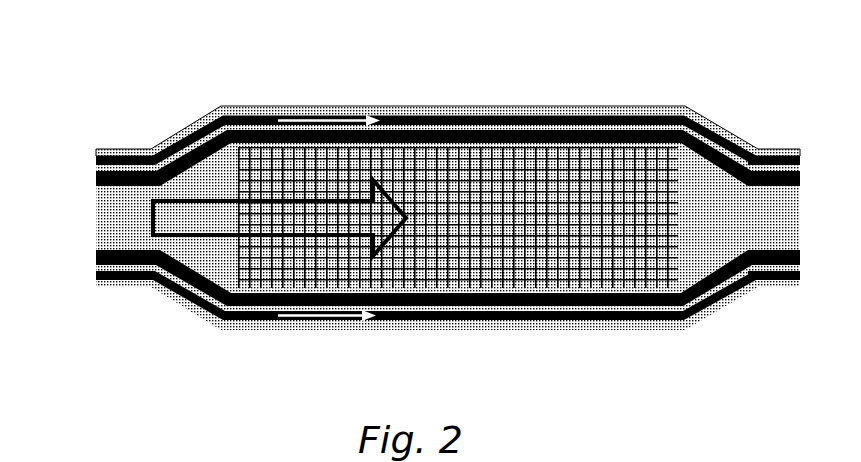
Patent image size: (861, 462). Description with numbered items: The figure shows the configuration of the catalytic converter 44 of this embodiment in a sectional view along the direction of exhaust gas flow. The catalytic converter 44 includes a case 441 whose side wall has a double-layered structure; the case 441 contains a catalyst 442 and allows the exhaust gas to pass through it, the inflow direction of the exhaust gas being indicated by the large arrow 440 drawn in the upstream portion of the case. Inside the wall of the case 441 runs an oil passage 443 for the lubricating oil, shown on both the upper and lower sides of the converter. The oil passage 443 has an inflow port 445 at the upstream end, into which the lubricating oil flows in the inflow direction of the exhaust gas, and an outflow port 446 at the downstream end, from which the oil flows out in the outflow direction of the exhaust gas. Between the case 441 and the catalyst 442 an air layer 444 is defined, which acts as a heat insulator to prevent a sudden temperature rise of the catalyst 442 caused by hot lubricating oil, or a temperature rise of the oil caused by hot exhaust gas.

The catalytic converter 44 is at (614, 87).
The arrow 440 is at (167, 231).
The case 441 is at (490, 99).
The catalyst 442 is at (463, 255).
The oil passage 443 is at (315, 103).
The air layer 444 is at (87, 164).
The inflow port 445 is at (88, 151).
The outflow port 446 is at (792, 151).